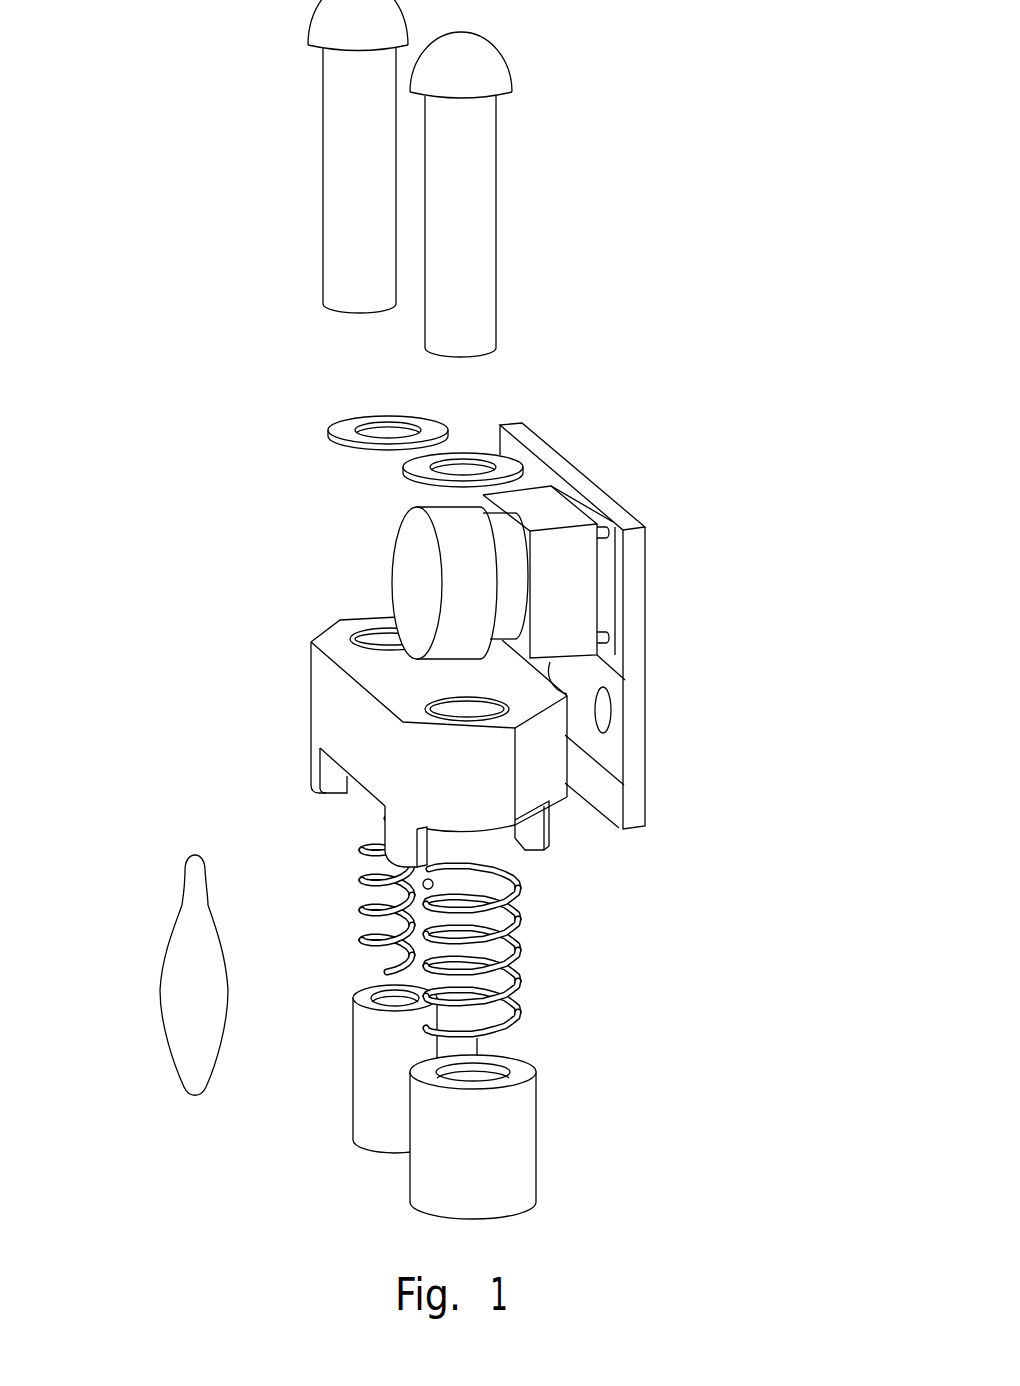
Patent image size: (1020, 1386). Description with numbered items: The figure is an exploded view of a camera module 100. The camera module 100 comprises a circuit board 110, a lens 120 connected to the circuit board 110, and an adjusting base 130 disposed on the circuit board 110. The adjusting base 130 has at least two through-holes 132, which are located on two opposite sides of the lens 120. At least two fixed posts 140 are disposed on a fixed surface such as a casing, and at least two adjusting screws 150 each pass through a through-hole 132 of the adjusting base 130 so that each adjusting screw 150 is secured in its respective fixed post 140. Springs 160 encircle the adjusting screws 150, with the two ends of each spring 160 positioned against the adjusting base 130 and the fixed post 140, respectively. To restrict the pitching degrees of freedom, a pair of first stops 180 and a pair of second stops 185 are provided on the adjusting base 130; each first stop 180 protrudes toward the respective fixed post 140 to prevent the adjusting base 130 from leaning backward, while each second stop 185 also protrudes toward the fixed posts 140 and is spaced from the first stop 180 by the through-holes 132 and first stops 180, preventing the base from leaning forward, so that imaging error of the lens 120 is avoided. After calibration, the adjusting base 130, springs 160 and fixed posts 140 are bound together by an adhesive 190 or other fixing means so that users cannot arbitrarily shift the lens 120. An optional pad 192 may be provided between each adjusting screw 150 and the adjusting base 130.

The camera module 100 is at (760, 96).
The circuit board 110 is at (635, 596).
The lens 120 is at (410, 542).
The adjusting base 130 is at (475, 785).
The through-hole 132 is at (430, 709).
The fixed post 140 is at (505, 1152).
The adjusting screw 150 is at (460, 190).
The spring 160 is at (507, 1017).
The first stop 180 is at (539, 845).
The second stop 185 is at (403, 838).
The adhesive 190 is at (190, 1015).
The pad 192 is at (463, 451).